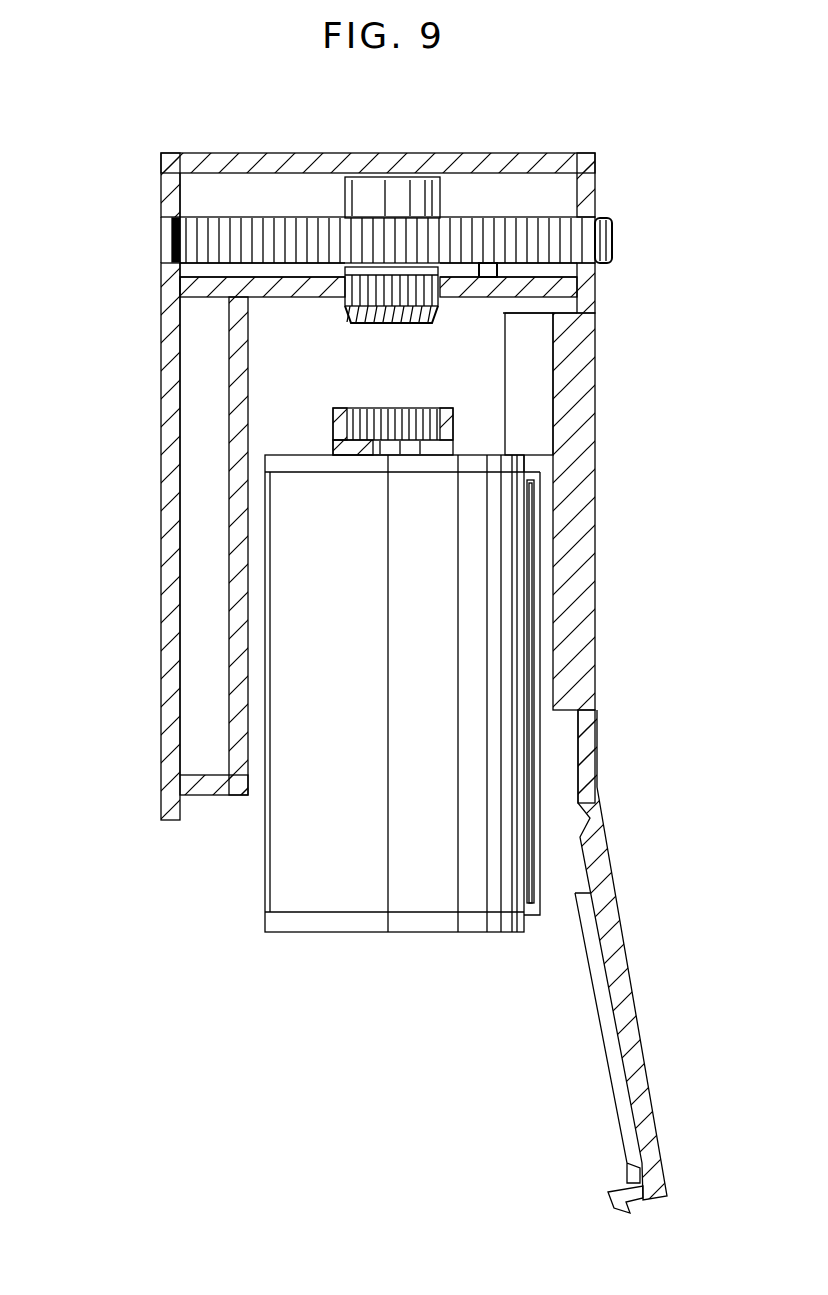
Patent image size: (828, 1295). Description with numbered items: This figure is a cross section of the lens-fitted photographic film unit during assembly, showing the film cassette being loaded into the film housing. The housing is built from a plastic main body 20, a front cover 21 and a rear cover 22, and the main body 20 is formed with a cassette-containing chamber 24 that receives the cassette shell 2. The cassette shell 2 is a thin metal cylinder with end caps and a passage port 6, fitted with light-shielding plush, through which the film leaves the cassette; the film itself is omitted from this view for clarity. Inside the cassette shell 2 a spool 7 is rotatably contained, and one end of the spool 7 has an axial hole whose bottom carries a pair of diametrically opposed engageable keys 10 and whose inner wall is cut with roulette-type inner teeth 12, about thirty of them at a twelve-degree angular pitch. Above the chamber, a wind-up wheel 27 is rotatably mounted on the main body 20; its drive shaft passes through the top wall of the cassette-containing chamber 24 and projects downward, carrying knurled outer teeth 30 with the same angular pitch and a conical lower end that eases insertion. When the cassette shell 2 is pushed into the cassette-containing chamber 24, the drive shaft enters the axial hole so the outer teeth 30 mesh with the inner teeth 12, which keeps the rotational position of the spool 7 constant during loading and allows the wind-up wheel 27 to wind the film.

The cassette shell 2 is at (350, 902).
The passage port 6 is at (530, 537).
The spool 7 is at (464, 422).
The engageable keys 10 is at (404, 428).
The inner teeth 12 is at (443, 433).
The main body 20 is at (238, 387).
The front cover 21 is at (172, 507).
The rear cover 22 is at (597, 373).
The cassette-containing chamber 24 is at (488, 338).
The wind-up wheel 27 is at (493, 237).
The outer teeth 30 is at (345, 318).